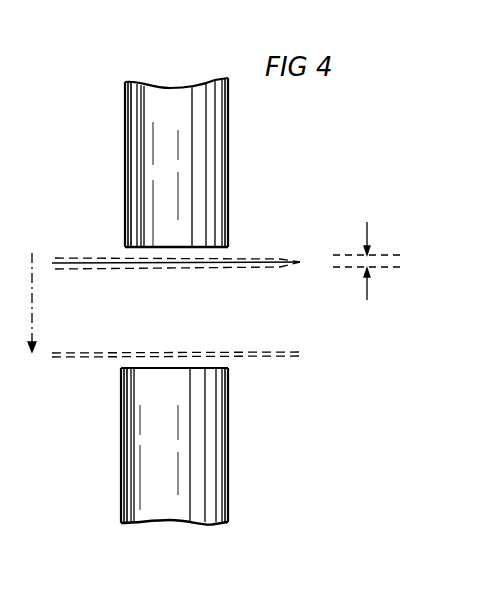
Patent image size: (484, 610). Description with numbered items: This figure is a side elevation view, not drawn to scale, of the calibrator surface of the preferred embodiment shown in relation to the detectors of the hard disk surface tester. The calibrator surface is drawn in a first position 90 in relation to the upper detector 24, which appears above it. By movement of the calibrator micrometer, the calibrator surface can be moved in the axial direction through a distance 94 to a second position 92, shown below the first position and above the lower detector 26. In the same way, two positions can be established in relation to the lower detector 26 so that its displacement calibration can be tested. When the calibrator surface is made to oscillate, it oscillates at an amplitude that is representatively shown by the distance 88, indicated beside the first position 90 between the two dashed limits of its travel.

The upper detector 24 is at (228, 152).
The lower detector 26 is at (228, 427).
The distance 88 is at (367, 240).
The first position 90 is at (53, 262).
The second position 92 is at (56, 357).
The distance 94 is at (33, 305).